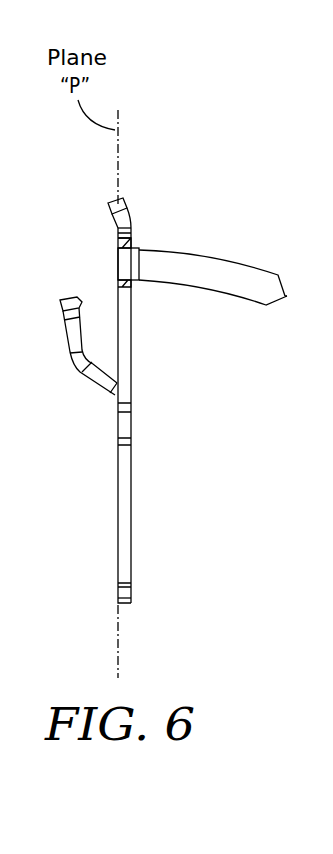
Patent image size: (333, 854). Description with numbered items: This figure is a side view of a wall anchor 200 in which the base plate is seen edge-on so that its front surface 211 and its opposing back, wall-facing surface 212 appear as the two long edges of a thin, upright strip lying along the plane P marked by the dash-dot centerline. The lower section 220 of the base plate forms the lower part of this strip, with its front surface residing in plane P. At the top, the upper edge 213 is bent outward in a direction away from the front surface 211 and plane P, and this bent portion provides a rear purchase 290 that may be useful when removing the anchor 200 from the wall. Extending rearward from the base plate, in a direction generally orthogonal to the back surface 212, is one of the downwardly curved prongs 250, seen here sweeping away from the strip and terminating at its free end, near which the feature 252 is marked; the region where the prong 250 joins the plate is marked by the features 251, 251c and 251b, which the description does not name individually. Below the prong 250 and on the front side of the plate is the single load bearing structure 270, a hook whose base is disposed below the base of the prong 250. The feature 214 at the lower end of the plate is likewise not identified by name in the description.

The wall anchor 200 is at (212, 140).
The front surface 211 is at (118, 482).
The back, wall-facing surface 212 is at (132, 505).
The upper edge 213 is at (111, 201).
The second end of pole 214 is at (122, 607).
The downwardly curved prong 250 is at (236, 271).
The clamp 251 is at (118, 263).
The lower clamp portion 251b is at (125, 283).
The upper clamp portion 251c is at (132, 246).
The arm end 252 is at (287, 296).
The load bearing structure 270 is at (67, 335).
The rear purchase 290 is at (130, 226).
The lower section 220 is at (325, 333).